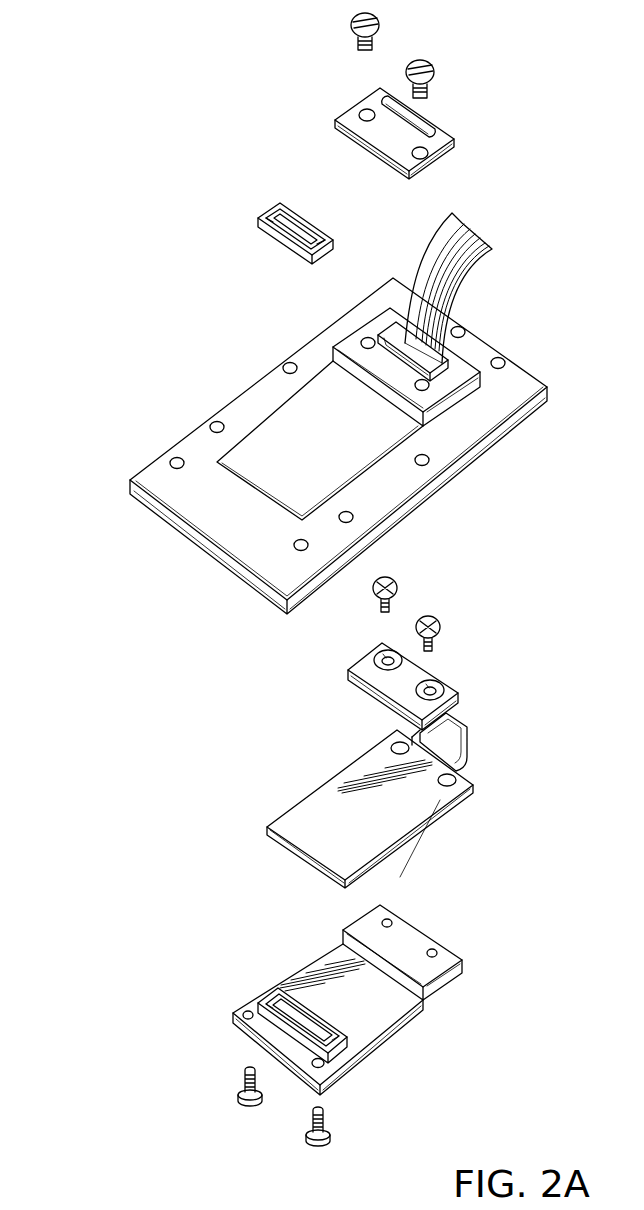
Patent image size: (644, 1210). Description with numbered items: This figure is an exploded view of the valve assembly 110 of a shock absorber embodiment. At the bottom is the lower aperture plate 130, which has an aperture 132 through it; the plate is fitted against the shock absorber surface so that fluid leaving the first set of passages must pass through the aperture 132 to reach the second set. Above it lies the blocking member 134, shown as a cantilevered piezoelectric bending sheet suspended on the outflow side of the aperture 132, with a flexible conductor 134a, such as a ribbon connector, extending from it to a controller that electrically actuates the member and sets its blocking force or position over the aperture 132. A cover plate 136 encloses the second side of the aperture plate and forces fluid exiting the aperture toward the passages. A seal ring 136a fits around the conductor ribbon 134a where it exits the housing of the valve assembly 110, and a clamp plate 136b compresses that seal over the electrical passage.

The valve assembly 110 is at (82, 1168).
The lower aperture plate 130 is at (305, 968).
The aperture 132 is at (265, 998).
The blocking member 134 is at (302, 808).
The flexible conductor 134a is at (468, 278).
The cover plate 136 is at (332, 444).
The seal ring 136a is at (268, 230).
The clamp plate 136b is at (452, 137).